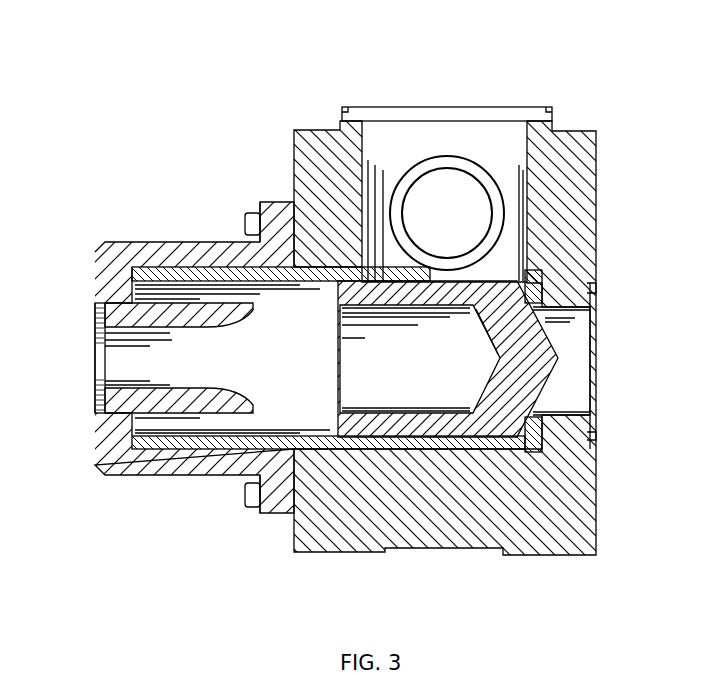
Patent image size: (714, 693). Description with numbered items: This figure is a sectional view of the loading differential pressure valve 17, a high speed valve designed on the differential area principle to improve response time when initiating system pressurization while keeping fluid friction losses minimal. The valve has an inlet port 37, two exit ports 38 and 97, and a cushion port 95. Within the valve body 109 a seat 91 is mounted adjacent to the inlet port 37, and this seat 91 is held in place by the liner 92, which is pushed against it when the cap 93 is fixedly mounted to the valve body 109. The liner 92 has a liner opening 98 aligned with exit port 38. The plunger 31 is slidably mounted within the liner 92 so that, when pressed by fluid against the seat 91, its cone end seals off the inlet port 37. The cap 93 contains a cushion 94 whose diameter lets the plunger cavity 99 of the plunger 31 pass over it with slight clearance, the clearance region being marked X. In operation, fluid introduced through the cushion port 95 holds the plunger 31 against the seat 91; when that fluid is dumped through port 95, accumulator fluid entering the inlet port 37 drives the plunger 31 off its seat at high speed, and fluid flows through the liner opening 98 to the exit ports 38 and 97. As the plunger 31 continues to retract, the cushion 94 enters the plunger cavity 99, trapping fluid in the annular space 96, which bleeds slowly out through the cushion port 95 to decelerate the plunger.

The loading differential pressure valve 17 is at (237, 128).
The exit port 38 is at (436, 98).
The exit port 97 is at (457, 211).
The liner opening 98 is at (505, 274).
The inlet port 37 is at (606, 357).
The plunger 31 is at (528, 378).
The seat 91 is at (541, 441).
The valve body 109 is at (563, 497).
The plunger cavity 99 is at (414, 375).
The annular space 96 is at (168, 420).
The liner 92 is at (208, 437).
The cap 93 is at (113, 262).
The cushion 94 is at (203, 317).
The gap X is at (173, 303).
The cushion port 95 is at (86, 352).